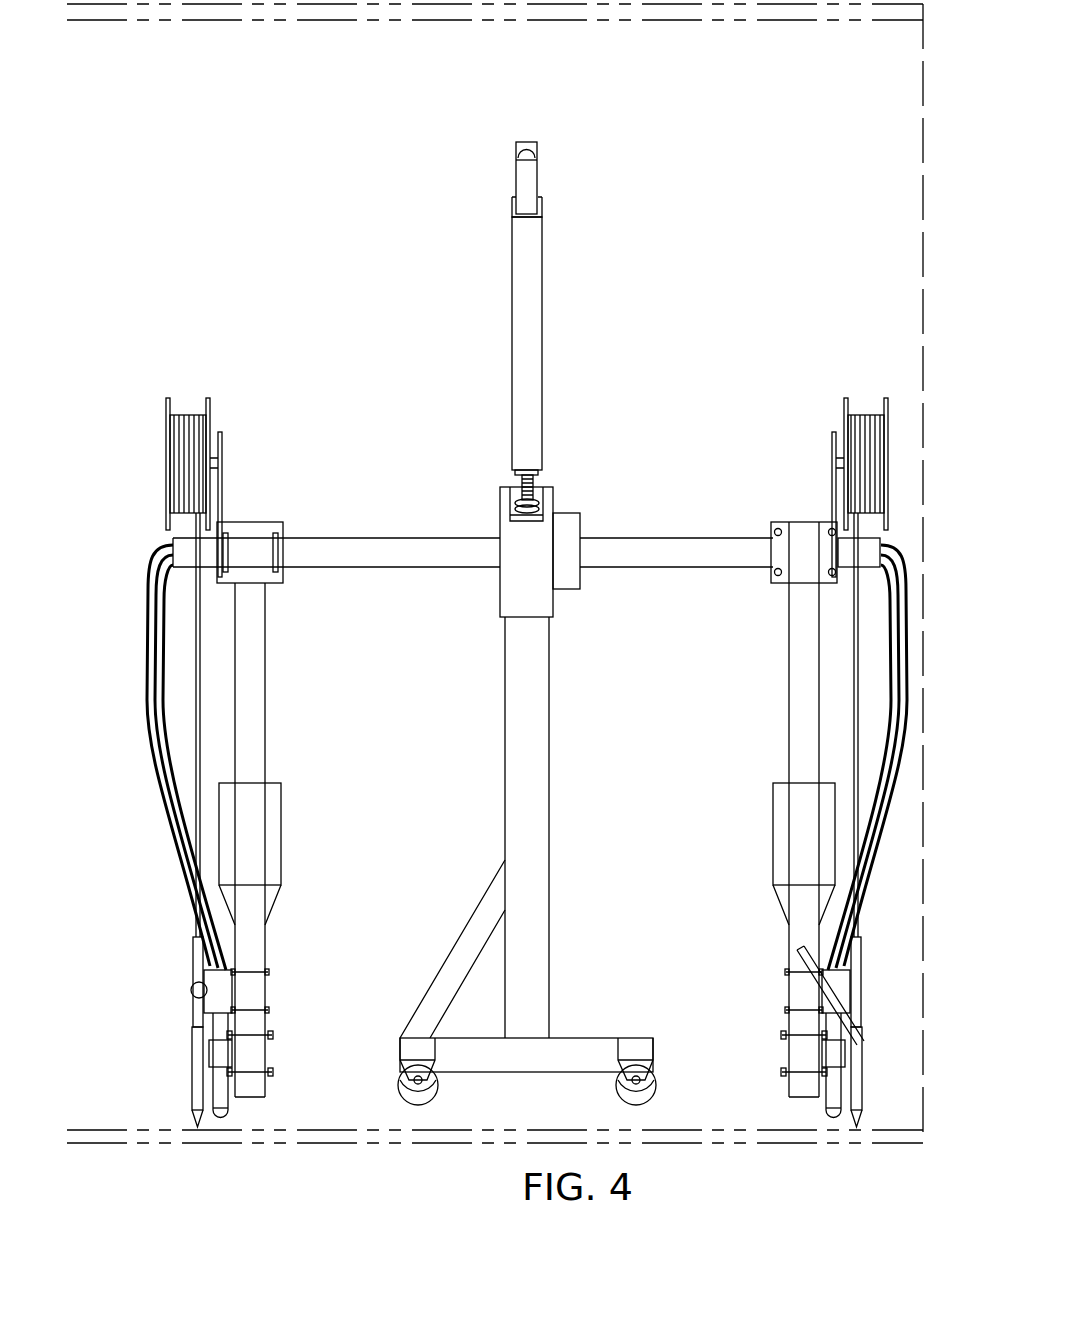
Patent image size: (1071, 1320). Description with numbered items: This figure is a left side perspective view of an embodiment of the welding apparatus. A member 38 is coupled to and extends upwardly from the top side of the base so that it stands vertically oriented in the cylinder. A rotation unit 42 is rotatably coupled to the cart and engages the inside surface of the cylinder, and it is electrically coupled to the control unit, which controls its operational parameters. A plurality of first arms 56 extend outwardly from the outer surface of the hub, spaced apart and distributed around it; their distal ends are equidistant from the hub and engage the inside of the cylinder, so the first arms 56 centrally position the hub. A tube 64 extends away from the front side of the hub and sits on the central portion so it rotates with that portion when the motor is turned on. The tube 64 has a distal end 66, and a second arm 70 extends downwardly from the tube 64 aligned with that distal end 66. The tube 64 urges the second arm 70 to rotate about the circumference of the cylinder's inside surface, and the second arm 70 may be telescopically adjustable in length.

The member 38 is at (550, 785).
The rotation unit 42 is at (527, 735).
The first arms 56 is at (543, 328).
The tube 64 is at (716, 538).
The distal end of the tube 66 is at (883, 540).
The second arm 70 is at (789, 660).